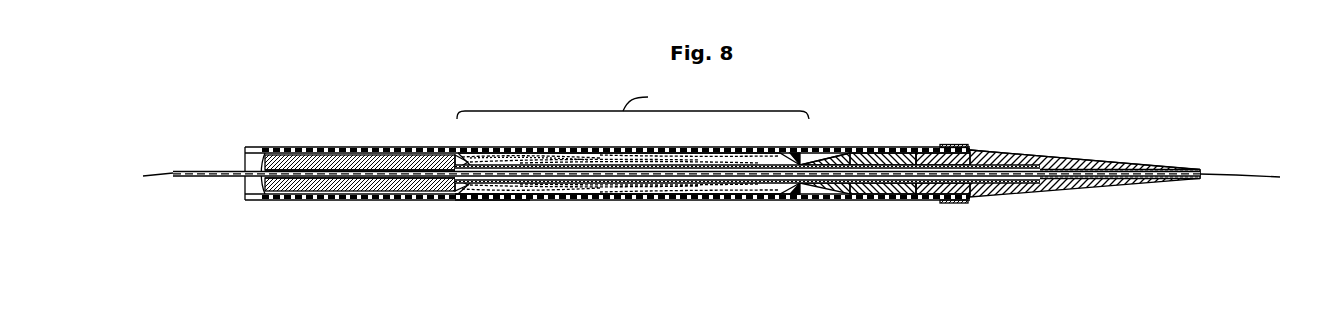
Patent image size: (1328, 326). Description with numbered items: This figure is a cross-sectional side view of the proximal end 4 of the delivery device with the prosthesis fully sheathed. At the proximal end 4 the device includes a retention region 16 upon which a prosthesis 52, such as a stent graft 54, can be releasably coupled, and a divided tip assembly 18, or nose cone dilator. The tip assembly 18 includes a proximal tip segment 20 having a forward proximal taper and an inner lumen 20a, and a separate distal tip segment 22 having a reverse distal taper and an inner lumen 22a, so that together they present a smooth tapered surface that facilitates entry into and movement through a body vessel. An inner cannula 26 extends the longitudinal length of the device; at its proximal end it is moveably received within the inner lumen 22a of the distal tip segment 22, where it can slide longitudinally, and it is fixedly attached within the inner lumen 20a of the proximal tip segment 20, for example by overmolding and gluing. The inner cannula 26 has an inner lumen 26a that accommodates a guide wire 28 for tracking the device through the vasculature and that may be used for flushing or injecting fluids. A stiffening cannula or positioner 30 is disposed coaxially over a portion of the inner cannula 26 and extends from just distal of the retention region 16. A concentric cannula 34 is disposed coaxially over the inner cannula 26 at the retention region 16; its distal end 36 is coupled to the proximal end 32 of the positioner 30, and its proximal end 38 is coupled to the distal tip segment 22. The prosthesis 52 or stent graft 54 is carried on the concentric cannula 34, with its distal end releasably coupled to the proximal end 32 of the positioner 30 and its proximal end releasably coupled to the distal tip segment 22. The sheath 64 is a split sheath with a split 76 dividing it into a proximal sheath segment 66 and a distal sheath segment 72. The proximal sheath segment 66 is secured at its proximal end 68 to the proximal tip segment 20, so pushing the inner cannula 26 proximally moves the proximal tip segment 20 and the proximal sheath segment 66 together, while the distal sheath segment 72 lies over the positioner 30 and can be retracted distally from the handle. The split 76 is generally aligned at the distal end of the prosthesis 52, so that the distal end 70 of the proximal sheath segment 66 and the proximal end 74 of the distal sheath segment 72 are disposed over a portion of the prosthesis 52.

The proximal end 4 is at (1110, 135).
The retention region 16 is at (633, 99).
The tip assembly 18 is at (990, 203).
The proximal tip segment 20 is at (1130, 186).
The inner lumen 20a is at (1026, 153).
The distal tip segment 22 is at (842, 200).
The inner lumen 22a is at (848, 152).
The inner cannula 26 is at (177, 178).
The inner lumen 26a is at (173, 171).
The guide wire 28 is at (1230, 178).
The positioner 30 is at (348, 147).
The proximal end 32 is at (446, 151).
The concentric cannula 34 is at (570, 160).
The distal end 36 is at (465, 155).
The proximal end 38 is at (796, 156).
The prosthesis 52 is at (737, 201).
The stent graft 54 is at (737, 201).
The sheath 64 is at (378, 201).
The proximal sheath segment 66 is at (688, 201).
The proximal end 68 is at (953, 203).
The distal end 70 is at (510, 203).
The distal sheath segment 72 is at (378, 201).
The proximal end 74 is at (500, 203).
The split 76 is at (500, 152).